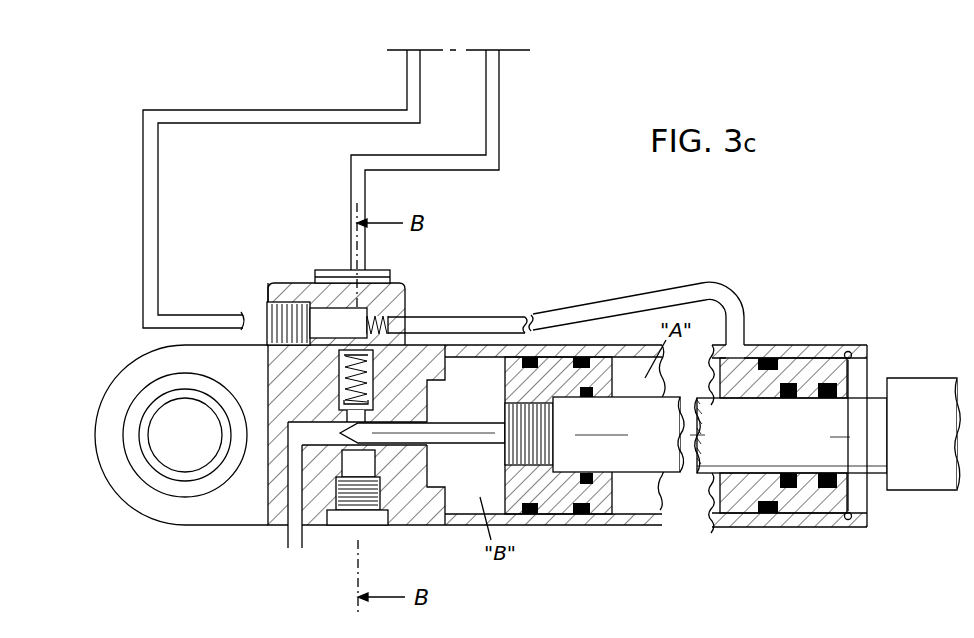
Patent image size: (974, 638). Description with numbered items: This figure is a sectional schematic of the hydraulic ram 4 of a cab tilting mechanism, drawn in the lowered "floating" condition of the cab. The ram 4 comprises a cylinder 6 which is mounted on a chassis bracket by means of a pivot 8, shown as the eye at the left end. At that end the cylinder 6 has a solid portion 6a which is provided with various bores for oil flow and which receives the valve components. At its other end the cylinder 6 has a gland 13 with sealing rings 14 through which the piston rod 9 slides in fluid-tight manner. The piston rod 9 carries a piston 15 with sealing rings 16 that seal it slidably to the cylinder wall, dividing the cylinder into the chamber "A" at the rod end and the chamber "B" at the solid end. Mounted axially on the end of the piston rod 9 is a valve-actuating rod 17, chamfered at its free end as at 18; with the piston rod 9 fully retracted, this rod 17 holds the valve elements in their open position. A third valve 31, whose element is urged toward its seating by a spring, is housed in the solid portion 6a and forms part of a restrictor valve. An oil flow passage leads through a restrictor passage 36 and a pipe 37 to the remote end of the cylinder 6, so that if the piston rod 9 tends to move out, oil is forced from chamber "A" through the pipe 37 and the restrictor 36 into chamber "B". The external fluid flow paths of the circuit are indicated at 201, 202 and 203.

The ram 4 is at (798, 334).
The cylinder 6 is at (628, 520).
The solid portion 6a is at (407, 500).
The pivot 8 is at (170, 443).
The piston rod 9 is at (845, 425).
The gland 13 is at (851, 508).
The sealing rings 14 is at (822, 382).
The piston 15 is at (565, 498).
The sealing rings 16 is at (580, 357).
The valve-actuating rod 17 is at (465, 432).
The chamfered free end 18 is at (336, 412).
The third valve 31 is at (360, 494).
The restrictor passage 36 is at (396, 297).
The pipe 37 is at (627, 300).
The fluid flow path 201 is at (407, 75).
The fluid flow path 202 is at (504, 72).
The fluid flow path 203 is at (288, 540).